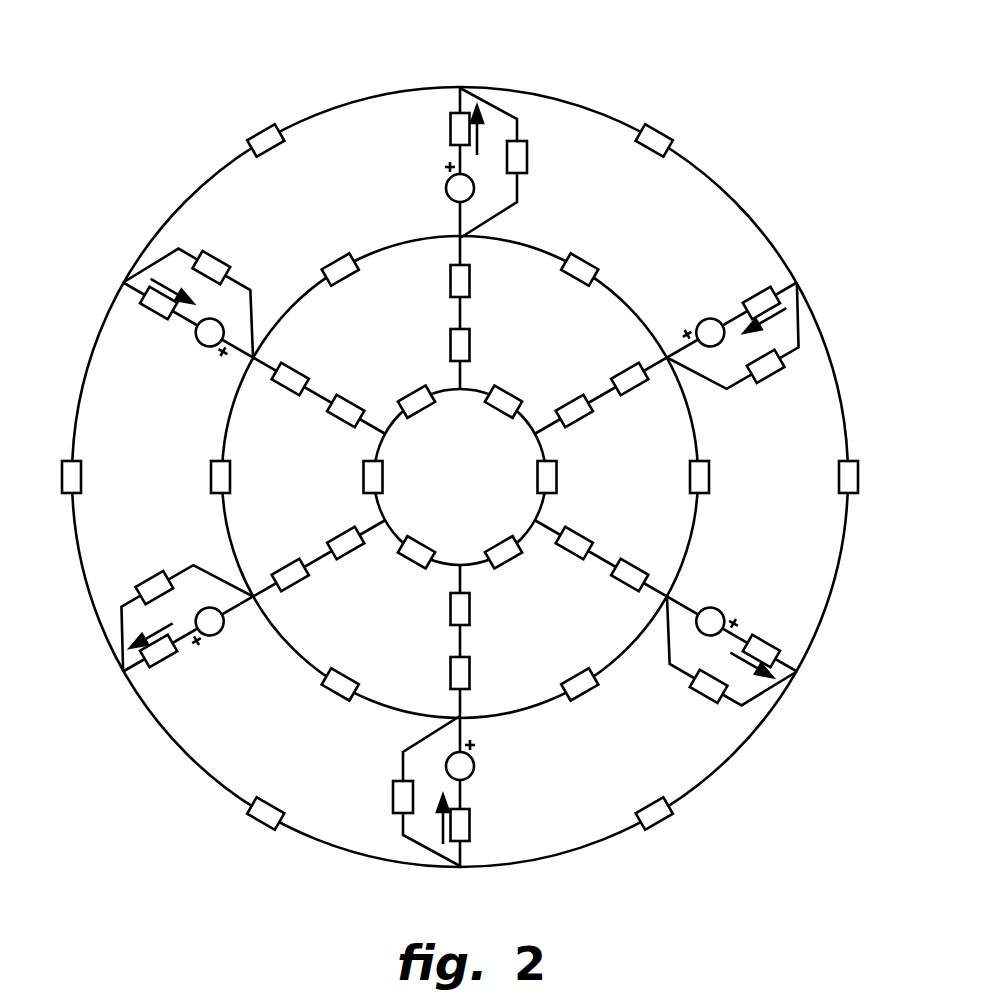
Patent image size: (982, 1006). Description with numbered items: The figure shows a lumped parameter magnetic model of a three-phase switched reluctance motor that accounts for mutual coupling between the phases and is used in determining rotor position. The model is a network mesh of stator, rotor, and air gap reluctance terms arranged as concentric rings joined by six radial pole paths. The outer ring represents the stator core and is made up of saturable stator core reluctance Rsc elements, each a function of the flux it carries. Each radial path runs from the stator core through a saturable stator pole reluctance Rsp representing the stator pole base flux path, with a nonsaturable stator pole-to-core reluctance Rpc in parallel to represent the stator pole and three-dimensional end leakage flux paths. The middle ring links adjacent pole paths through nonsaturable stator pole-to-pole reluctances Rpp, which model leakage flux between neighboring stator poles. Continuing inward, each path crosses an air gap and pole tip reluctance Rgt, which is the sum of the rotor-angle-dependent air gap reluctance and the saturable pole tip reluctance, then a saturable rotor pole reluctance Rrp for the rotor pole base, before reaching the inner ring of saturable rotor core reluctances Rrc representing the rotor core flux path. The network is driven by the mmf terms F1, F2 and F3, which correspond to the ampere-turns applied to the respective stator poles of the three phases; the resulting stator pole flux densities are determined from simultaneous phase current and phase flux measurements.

The stator core reluctance Rsc is at (461, 478).
The stator pole-to-pole reluctance Rpp is at (453, 481).
The stator pole-to-core reluctance Rpc is at (460, 477).
The stator pole reluctance Rsp is at (449, 480).
The air gap and pole tip reluctance Rgt is at (458, 487).
The rotor pole reluctance Rrp is at (460, 485).
The rotor core reluctance Rrc is at (461, 477).
The mmf term F1 is at (461, 475).
The mmf term F2 is at (459, 478).
The mmf term F3 is at (462, 476).